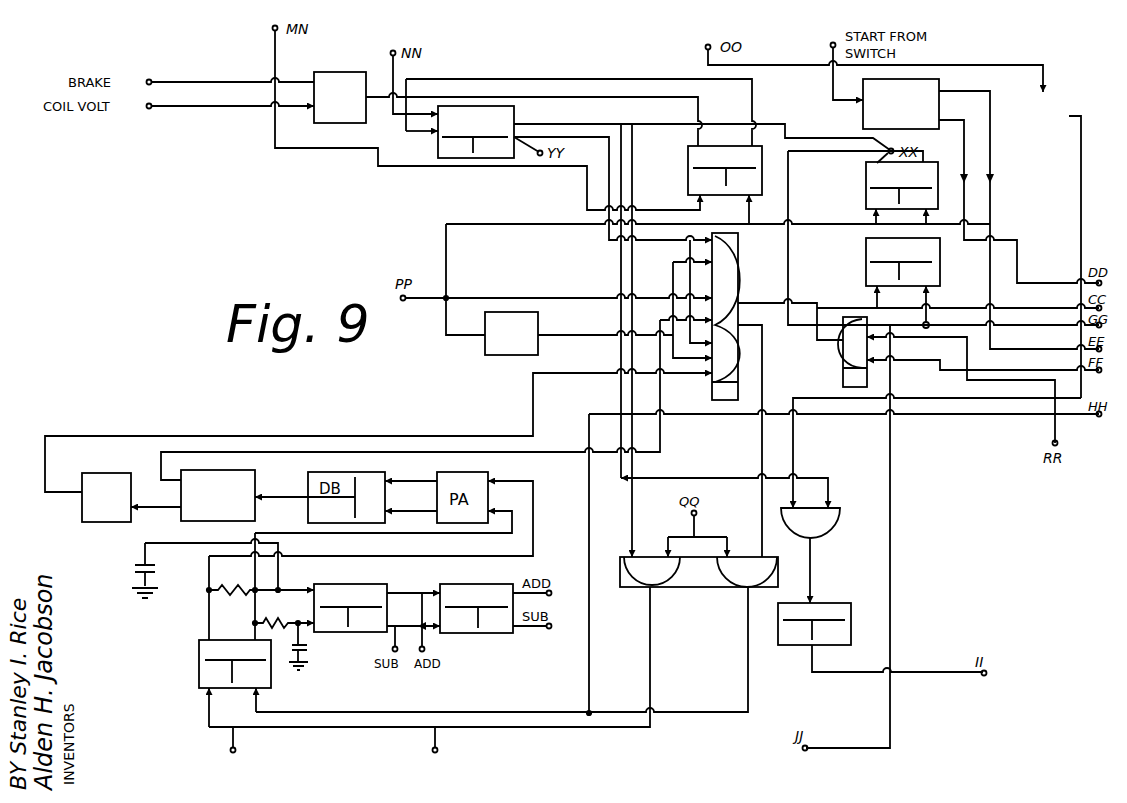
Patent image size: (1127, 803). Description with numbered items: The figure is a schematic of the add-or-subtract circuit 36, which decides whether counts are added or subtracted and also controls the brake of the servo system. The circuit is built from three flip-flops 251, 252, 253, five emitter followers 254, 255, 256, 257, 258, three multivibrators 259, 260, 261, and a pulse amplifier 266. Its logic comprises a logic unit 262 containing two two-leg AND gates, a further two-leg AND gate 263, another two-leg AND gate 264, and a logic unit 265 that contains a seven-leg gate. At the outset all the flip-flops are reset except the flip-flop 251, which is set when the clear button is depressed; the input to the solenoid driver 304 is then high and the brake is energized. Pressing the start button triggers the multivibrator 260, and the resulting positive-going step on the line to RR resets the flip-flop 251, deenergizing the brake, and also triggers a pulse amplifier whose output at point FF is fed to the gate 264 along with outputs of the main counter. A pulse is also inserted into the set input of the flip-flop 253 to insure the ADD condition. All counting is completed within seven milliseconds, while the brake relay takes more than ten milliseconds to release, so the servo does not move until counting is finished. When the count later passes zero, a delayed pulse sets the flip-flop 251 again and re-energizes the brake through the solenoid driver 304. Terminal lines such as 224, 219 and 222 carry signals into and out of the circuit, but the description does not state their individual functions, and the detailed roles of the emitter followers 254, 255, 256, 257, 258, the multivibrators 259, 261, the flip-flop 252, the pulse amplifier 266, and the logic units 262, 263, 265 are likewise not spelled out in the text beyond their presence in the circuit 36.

The solenoid driver 304 is at (336, 78).
The emitter follower 255 is at (514, 112).
The flip-flop 251 is at (690, 157).
The multivibrator 260 is at (864, 122).
The emitter follower 254 is at (866, 177).
The flip-flop 252 is at (866, 250).
The conductor to terminal CC 224 is at (1038, 301).
The multivibrator 261 is at (502, 355).
The logic unit 265 is at (722, 391).
The two-leg AND gate 264 is at (850, 377).
The add-or-subtract circuit 36 is at (293, 436).
The pulse amplifier 266 is at (102, 520).
The multivibrator 259 is at (222, 512).
The flip-flop 253 is at (199, 650).
The emitter follower 257 is at (347, 592).
The emitter follower 258 is at (473, 593).
The input terminal 219 is at (231, 741).
The input terminal 222 is at (433, 743).
The logic unit 262 is at (697, 582).
The two-leg AND gate 263 is at (825, 527).
The emitter follower 256 is at (832, 609).